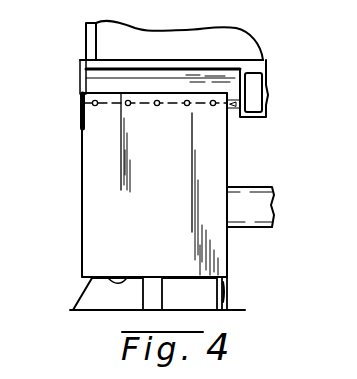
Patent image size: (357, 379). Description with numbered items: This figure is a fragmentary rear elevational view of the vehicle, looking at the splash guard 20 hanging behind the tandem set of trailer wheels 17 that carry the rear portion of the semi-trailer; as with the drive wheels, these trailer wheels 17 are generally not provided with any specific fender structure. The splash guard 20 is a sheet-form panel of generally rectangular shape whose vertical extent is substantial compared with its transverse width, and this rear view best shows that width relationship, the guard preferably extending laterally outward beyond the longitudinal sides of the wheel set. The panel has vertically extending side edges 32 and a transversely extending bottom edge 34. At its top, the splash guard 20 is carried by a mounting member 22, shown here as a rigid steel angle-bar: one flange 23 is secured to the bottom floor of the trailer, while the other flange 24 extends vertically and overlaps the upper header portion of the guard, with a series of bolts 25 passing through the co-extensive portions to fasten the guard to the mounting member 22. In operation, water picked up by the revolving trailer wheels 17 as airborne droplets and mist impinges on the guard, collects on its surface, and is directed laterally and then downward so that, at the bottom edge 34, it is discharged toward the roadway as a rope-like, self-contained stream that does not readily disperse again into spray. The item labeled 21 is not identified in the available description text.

The trailer wheels 17 is at (84, 292).
The splash guard 20 is at (207, 160).
The left bracket 21 is at (79, 72).
The mounting member 22 is at (218, 84).
The flange 23 is at (174, 30).
The flange 24 is at (171, 45).
The bolts 25 is at (160, 104).
The side edges 32 is at (82, 177).
The bottom edge 34 is at (112, 280).